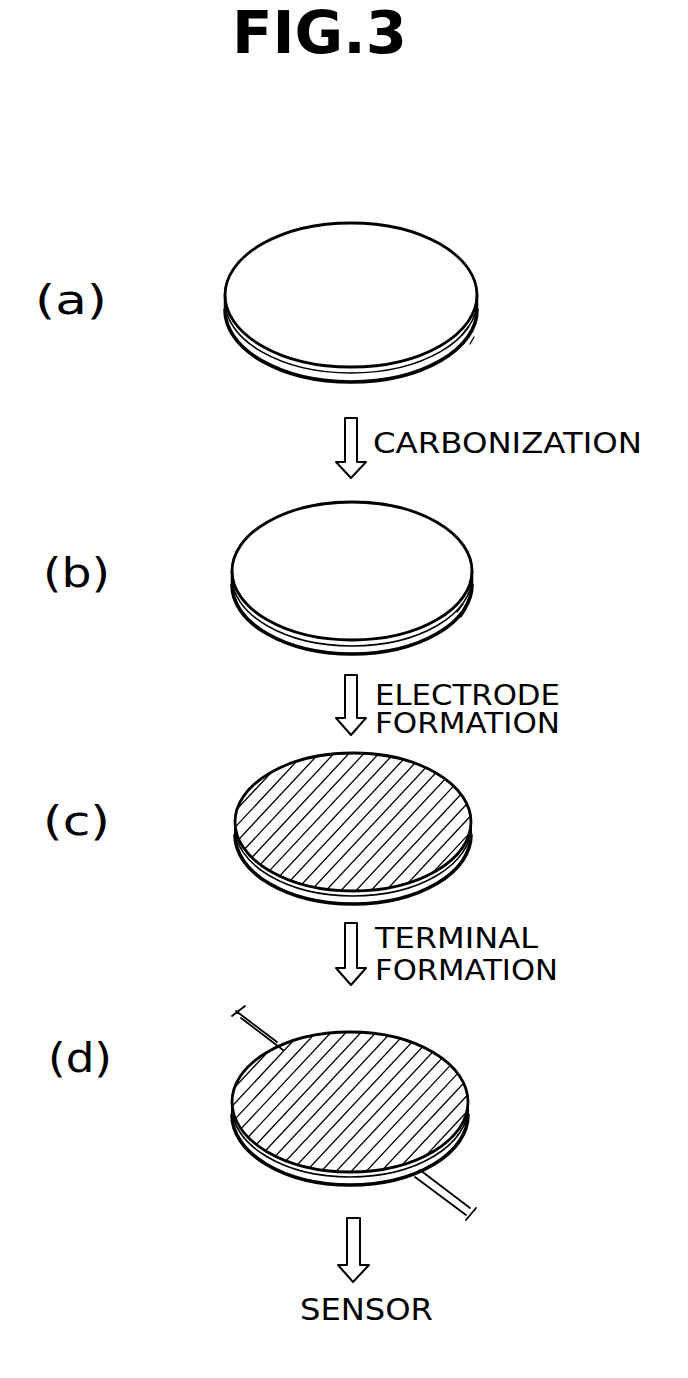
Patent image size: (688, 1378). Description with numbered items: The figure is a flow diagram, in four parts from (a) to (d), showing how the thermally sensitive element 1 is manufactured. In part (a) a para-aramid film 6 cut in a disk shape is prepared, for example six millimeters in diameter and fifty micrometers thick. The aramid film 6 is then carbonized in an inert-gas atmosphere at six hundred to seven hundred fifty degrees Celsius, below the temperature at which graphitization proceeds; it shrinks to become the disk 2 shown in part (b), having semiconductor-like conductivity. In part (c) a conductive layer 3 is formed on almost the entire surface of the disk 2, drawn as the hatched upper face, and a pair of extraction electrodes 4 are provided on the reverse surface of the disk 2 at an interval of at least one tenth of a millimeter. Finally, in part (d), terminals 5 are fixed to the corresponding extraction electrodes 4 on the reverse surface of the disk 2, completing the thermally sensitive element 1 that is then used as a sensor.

The thermally sensitive element 1 is at (478, 1066).
The disk 2 is at (440, 562).
The conductive layer 3 is at (440, 802).
The extraction electrodes 4 is at (262, 880).
The terminals 5 is at (253, 1035).
The para-aramid film 6 is at (437, 288).